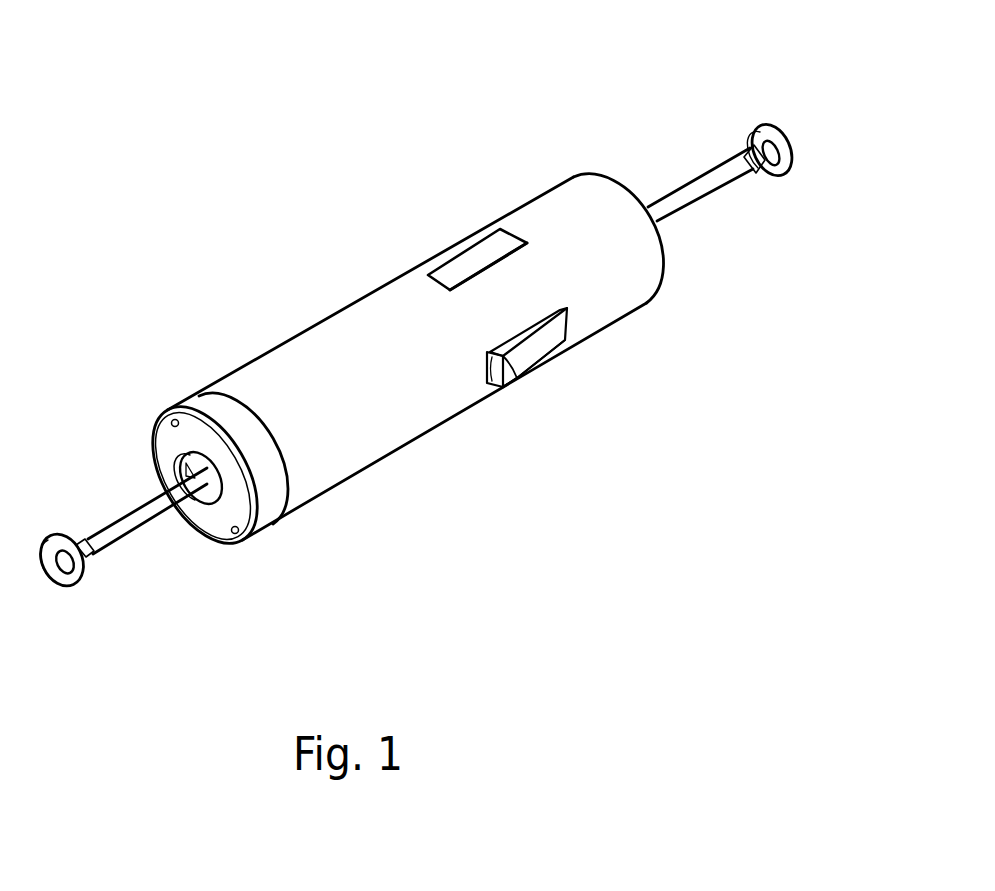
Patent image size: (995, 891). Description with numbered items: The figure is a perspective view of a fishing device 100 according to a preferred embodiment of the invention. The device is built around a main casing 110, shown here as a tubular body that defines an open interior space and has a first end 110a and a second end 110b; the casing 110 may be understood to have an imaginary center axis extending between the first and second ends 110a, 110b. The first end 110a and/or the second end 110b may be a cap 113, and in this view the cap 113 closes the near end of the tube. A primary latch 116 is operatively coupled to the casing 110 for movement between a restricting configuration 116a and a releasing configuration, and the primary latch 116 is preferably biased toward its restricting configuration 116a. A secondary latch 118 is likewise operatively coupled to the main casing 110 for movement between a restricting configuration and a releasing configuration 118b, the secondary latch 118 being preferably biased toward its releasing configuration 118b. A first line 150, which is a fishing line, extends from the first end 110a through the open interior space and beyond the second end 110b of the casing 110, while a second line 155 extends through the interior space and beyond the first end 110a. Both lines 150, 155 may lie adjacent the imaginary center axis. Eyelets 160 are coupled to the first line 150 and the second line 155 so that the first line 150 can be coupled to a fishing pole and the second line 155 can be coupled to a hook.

The fishing device 100 is at (197, 95).
The main casing 110 is at (296, 333).
The first end 110a is at (611, 172).
The second end 110b is at (215, 540).
The cap 113 is at (273, 540).
The primary latch 116 is at (448, 272).
The restricting configuration 116a is at (476, 258).
The secondary latch 118 is at (537, 338).
The releasing configuration 118b is at (525, 378).
The first line 150 is at (123, 512).
The second line 155 is at (700, 198).
The eyelets 160 is at (64, 585).